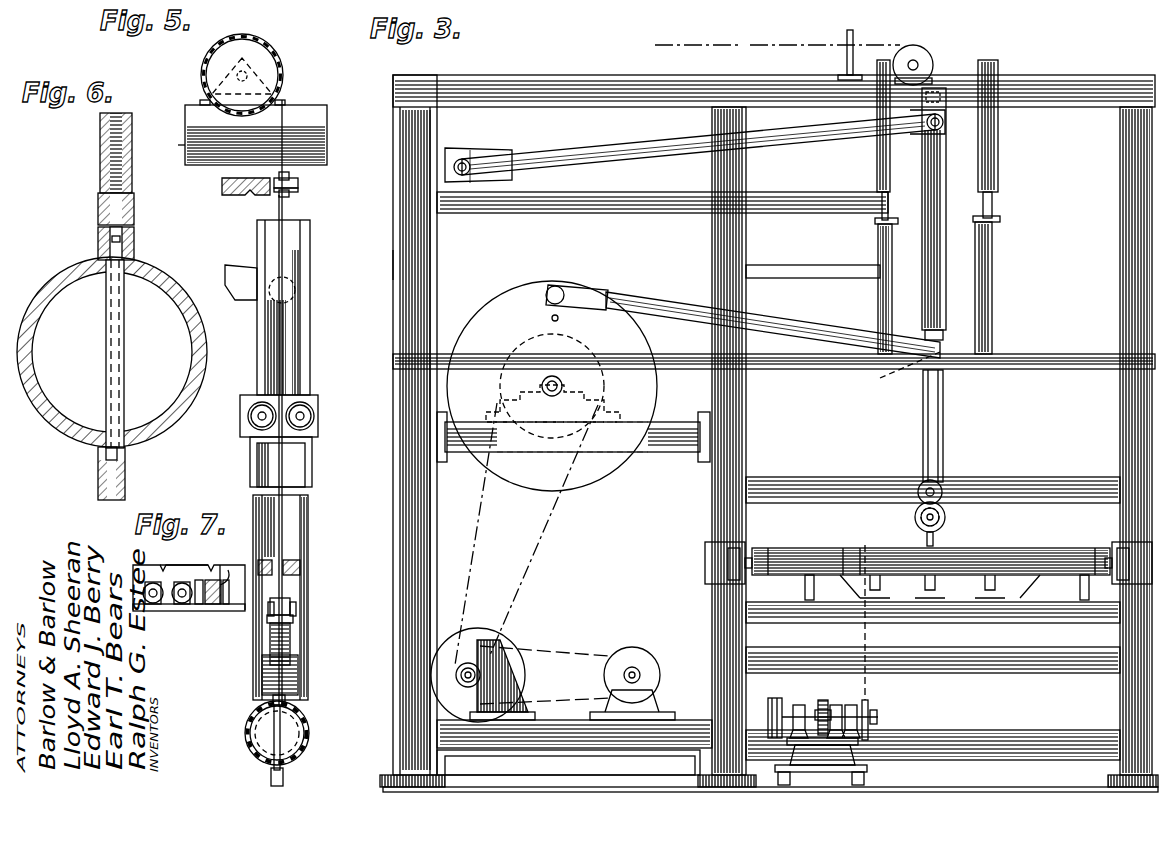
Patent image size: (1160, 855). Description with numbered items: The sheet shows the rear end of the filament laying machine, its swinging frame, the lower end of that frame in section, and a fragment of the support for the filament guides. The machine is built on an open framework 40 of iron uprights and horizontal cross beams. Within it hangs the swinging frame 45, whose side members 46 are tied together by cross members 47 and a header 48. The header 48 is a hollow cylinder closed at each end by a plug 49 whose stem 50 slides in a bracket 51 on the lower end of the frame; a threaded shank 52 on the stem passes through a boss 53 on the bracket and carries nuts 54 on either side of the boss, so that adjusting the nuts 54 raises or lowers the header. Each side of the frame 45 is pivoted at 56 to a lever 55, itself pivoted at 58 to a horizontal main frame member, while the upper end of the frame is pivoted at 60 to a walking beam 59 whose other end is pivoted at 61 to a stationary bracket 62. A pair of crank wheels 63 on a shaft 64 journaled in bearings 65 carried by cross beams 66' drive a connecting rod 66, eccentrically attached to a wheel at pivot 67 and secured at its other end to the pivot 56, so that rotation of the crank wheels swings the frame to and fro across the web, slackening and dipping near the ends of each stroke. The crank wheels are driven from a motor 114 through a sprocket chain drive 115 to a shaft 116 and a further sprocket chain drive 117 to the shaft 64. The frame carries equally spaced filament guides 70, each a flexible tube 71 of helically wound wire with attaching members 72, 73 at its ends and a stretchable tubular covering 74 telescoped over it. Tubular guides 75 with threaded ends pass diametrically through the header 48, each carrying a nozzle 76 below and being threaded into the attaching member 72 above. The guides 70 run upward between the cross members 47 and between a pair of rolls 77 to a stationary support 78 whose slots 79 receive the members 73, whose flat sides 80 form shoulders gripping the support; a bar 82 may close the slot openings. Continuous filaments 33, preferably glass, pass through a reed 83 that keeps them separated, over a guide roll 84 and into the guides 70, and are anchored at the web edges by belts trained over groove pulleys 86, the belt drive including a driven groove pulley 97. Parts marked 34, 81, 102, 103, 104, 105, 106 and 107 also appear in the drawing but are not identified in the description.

In FIG. 3, the filaments 33 is at (777, 33).
In FIG. 3, the roller 34 is at (1035, 548).
In FIG. 3, the framework 40 is at (383, 266).
In FIG. 3, the swinging frame 45 is at (955, 285).
In FIG. 3, the side members 46 is at (947, 307).
In FIG. 5, the cross members 47 is at (300, 555).
In FIG. 3, the header 48 is at (945, 517).
In FIG. 5, the header 48 is at (248, 738).
In FIG. 6, the header 48 is at (75, 437).
In FIG. 3, the plug 49 is at (915, 517).
In FIG. 5, the plug 49 is at (292, 724).
In FIG. 5, the stem 50 is at (292, 640).
In FIG. 5, the bracket 51 is at (298, 670).
In FIG. 5, the threaded shank 52 is at (290, 592).
In FIG. 5, the boss 53 is at (298, 608).
In FIG. 5, the nuts 54 is at (296, 603).
In FIG. 3, the lever 55 is at (945, 438).
In FIG. 3, the pivot 56 is at (880, 378).
In FIG. 3, the pivot 58 is at (938, 483).
In FIG. 3, the walking beam 59 is at (652, 153).
In FIG. 3, the pivot 60 is at (944, 122).
In FIG. 5, the pivot 60 is at (296, 292).
In FIG. 3, the pivot 61 is at (470, 165).
In FIG. 3, the stationary bracket 62 is at (462, 159).
In FIG. 3, the crank wheels 63 is at (597, 478).
In FIG. 3, the shaft 64 is at (553, 425).
In FIG. 3, the bearings 65 is at (605, 408).
In FIG. 3, the connecting rod 66 is at (743, 314).
In FIG. 3, the cross beams 66' is at (573, 443).
In FIG. 3, the pivot 67 is at (560, 288).
In FIG. 6, the filament guides 70 is at (90, 176).
In FIG. 6, the flexible tubes 71 is at (122, 176).
In FIG. 5, the attaching member 72 is at (272, 700).
In FIG. 6, the attaching member 72 is at (134, 243).
In FIG. 5, the attaching member 73 is at (280, 190).
In FIG. 7, the attaching member 73 is at (215, 606).
In FIG. 6, the tubular covering 74 is at (98, 203).
In FIG. 6, the tubular guides 75 is at (124, 365).
In FIG. 3, the nozzle 76 is at (935, 537).
In FIG. 5, the nozzle 76 is at (284, 778).
In FIG. 6, the nozzle 76 is at (126, 488).
In FIG. 5, the rolls 77 is at (252, 420).
In FIG. 5, the stationary support 78 is at (232, 196).
In FIG. 7, the stationary support 78 is at (200, 565).
In FIG. 5, the slots 79 is at (298, 182).
In FIG. 7, the slots 79 is at (212, 606).
In FIG. 5, the flat sides 80 is at (298, 190).
In FIG. 7, the flat sides 80 is at (231, 565).
In FIG. 5, the block 81 is at (292, 176).
In FIG. 7, the block 81 is at (198, 606).
In FIG. 7, the bar 82 is at (153, 606).
In FIG. 3, the reed 83 is at (853, 36).
In FIG. 3, the guide roll 84 is at (922, 57).
In FIG. 3, the groove pulleys 86 is at (802, 583).
In FIG. 3, the driven groove pulley 97 is at (845, 548).
In FIG. 3, the center line 102 is at (868, 636).
In FIG. 3, the shaft assembly 103 is at (869, 694).
In FIG. 3, the gear 104 is at (822, 700).
In FIG. 3, the bearing 105 is at (848, 705).
In FIG. 3, the bearing 106 is at (797, 705).
In FIG. 3, the pulley 107 is at (772, 730).
In FIG. 3, the motor 114 is at (640, 660).
In FIG. 3, the sprocket chain drive 115 is at (578, 650).
In FIG. 3, the shaft 116 is at (508, 662).
In FIG. 3, the sprocket chain drive 117 is at (527, 575).